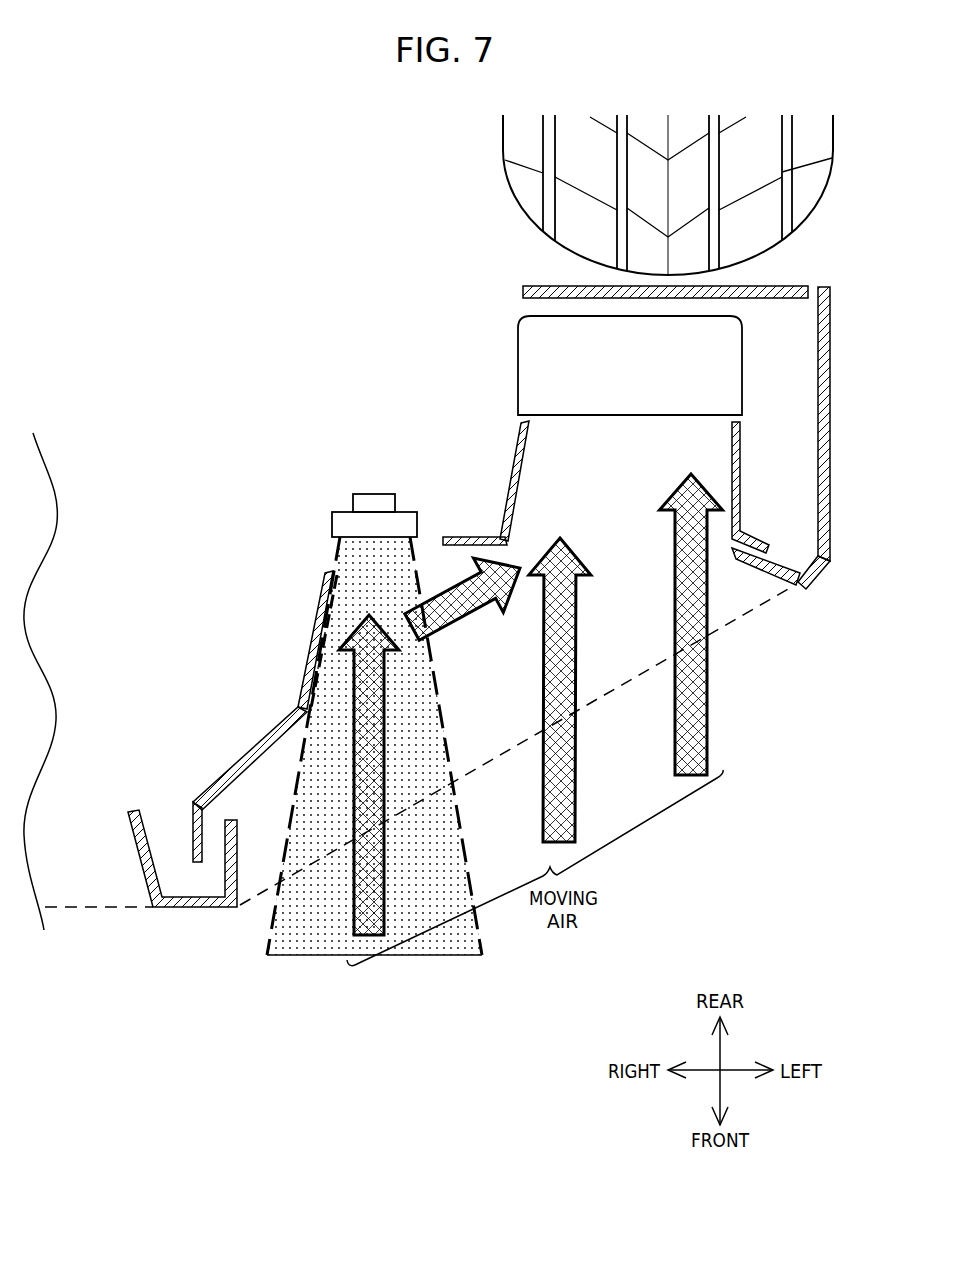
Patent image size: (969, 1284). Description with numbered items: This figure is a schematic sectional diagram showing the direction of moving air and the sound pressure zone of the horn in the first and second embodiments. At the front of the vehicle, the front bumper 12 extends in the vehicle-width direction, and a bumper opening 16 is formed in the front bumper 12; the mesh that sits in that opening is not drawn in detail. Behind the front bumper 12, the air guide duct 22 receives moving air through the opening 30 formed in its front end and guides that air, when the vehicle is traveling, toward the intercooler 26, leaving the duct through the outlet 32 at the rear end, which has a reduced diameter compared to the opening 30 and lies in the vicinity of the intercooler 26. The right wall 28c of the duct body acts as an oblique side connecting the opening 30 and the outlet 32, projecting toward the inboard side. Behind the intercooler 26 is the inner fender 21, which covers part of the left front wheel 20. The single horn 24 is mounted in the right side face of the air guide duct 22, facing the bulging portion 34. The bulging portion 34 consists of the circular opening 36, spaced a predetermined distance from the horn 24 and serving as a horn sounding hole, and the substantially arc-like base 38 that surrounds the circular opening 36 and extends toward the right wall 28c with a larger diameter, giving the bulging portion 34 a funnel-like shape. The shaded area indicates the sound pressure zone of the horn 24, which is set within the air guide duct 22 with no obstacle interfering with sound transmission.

The front bumper 12 is at (831, 418).
The bumper opening 16 is at (782, 583).
The left front wheel 20 is at (523, 211).
The inner fender 21 is at (521, 292).
The air guide duct 22 is at (243, 718).
The horn 24 is at (412, 488).
The intercooler 26 is at (508, 364).
The right wall 28c is at (512, 482).
The opening 30 is at (733, 551).
The outlet 32 is at (712, 405).
The bulging portion 34 is at (308, 617).
The circular opening 36 is at (443, 537).
The base 38 is at (312, 648).